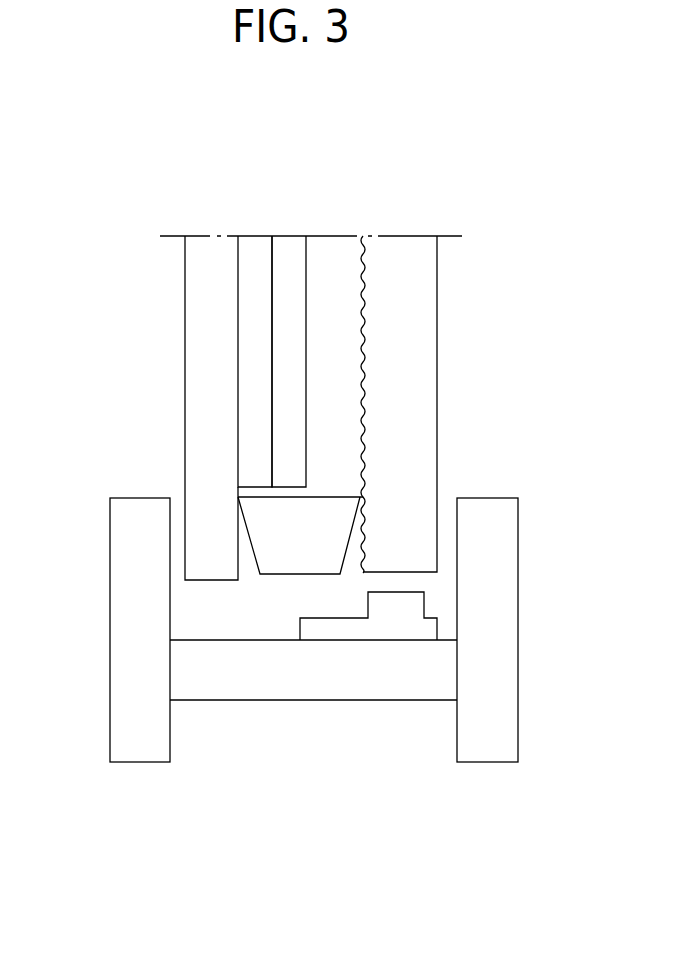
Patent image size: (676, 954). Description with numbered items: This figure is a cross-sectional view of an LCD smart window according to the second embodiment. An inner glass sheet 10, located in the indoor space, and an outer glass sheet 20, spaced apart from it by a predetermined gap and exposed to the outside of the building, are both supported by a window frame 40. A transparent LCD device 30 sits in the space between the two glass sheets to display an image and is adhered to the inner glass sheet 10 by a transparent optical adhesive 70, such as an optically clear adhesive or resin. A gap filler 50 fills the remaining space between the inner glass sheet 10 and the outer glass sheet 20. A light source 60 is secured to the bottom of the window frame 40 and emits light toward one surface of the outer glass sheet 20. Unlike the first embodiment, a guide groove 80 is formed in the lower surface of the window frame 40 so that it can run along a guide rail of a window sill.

The inner glass sheet 10 is at (201, 398).
The outer glass sheet 20 is at (416, 395).
The transparent LCD device 30 is at (286, 254).
The window frame 40 is at (125, 580).
The gap filler 50 is at (352, 517).
The light source 60 is at (425, 625).
The transparent optical adhesive 70 is at (250, 254).
The guide groove 80 is at (337, 727).